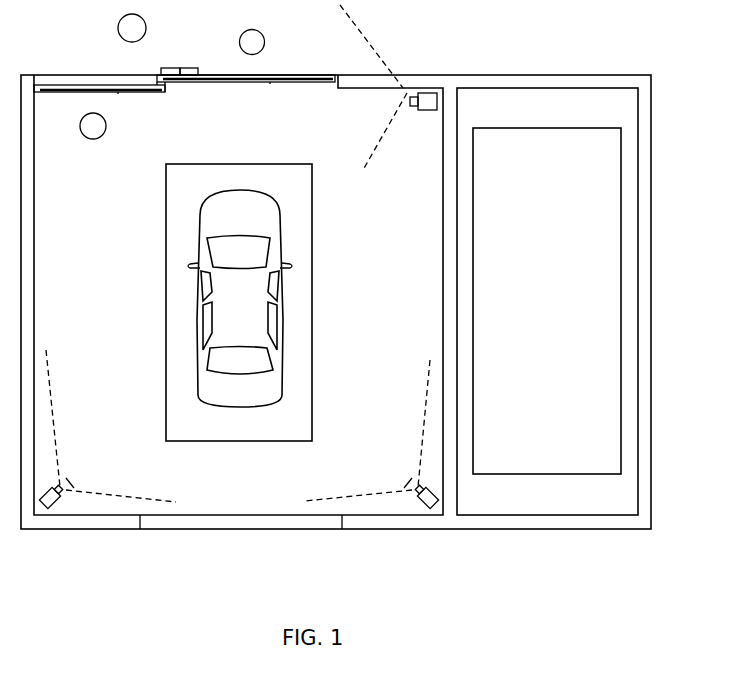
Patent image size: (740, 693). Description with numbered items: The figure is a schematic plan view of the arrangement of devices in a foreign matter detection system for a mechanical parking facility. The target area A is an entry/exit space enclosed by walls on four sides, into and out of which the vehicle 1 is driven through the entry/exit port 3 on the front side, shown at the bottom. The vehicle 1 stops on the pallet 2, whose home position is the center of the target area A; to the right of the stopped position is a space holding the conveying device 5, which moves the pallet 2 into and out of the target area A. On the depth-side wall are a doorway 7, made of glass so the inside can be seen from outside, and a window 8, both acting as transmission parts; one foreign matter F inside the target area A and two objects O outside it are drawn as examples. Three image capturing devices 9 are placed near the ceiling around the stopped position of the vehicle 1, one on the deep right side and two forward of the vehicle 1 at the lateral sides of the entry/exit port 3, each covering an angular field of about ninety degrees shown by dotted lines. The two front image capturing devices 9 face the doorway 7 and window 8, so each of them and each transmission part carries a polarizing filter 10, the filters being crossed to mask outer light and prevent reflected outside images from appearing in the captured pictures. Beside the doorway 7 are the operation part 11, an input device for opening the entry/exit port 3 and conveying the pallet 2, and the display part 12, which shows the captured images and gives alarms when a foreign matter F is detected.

The vehicle 1 is at (284, 237).
The pallet 2 is at (313, 172).
The entry/exit port 3 is at (311, 529).
The conveying device 5 is at (597, 232).
The doorway 7 is at (82, 84).
The window 8 is at (313, 75).
The image capturing device 9 is at (432, 93).
The polarizing filter 10 is at (118, 93).
The operation part 11 is at (173, 68).
The display part 12 is at (193, 68).
The target area A is at (363, 112).
The foreign matter F is at (93, 142).
The object O is at (118, 23).